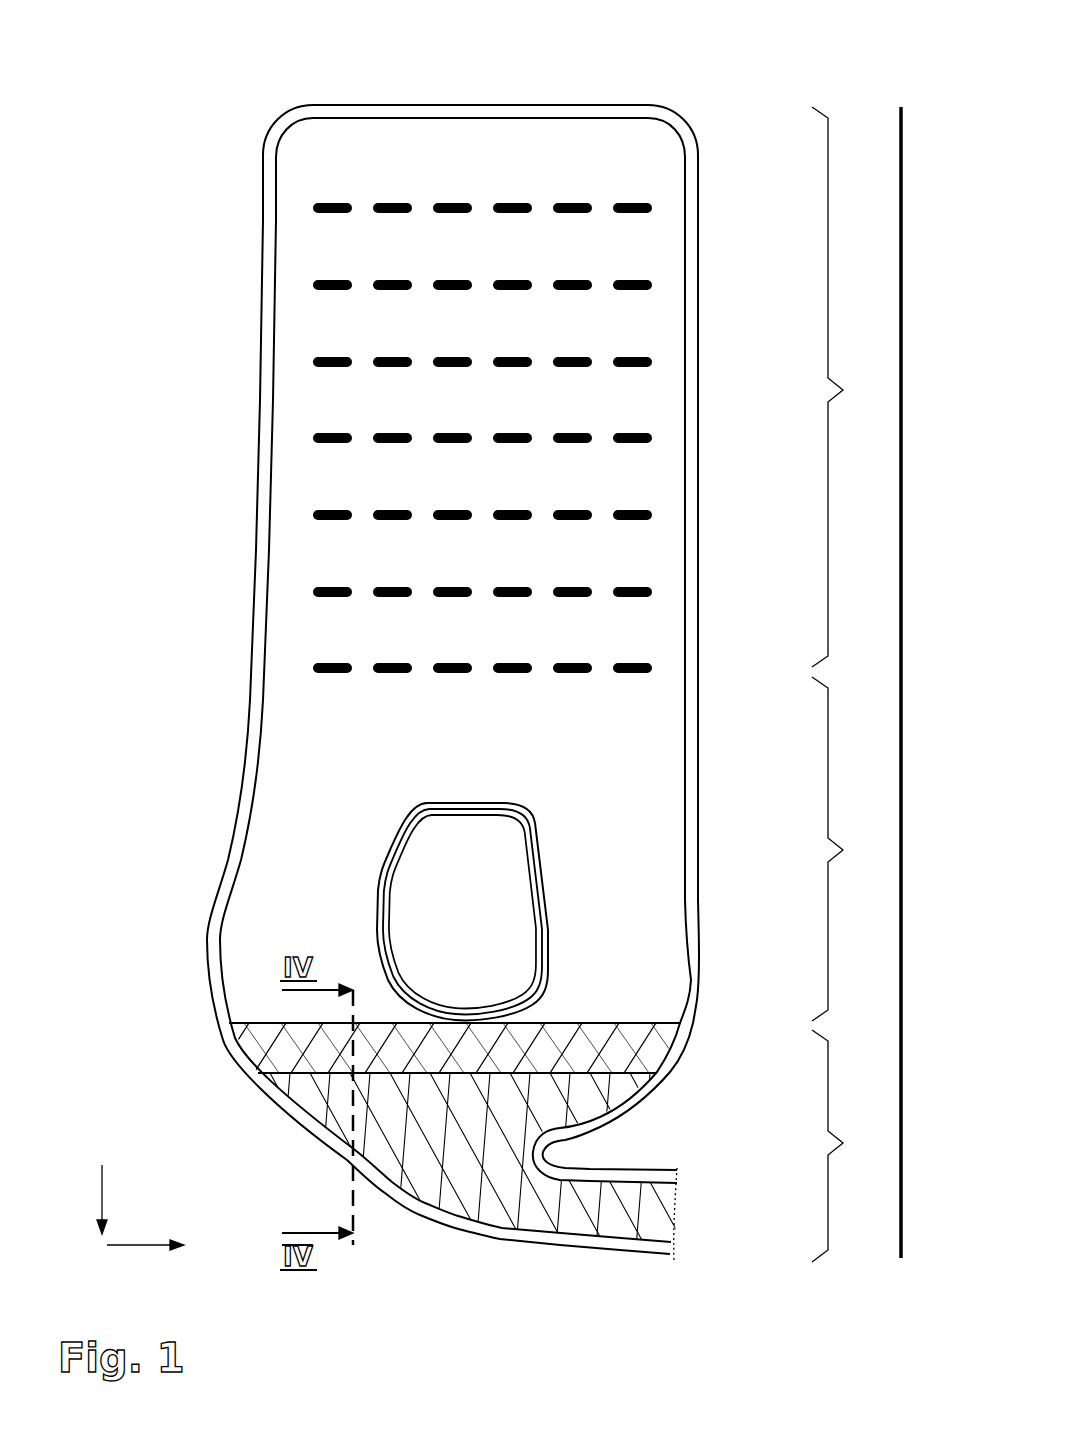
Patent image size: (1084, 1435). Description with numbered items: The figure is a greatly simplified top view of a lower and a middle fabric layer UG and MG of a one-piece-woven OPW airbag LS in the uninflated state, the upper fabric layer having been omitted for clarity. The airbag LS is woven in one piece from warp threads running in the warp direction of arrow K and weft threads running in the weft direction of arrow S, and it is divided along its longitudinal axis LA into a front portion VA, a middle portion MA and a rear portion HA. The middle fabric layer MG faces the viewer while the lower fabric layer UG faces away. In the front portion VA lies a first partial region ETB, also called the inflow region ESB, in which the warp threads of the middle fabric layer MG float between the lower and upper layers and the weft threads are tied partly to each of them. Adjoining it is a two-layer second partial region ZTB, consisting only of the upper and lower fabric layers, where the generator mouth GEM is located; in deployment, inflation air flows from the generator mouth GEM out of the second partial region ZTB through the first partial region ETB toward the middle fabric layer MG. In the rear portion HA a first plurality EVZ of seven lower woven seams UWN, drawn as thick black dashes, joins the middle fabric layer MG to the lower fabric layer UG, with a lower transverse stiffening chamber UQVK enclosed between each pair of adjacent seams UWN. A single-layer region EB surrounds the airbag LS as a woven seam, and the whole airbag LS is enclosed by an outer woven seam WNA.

The OPW airbag LS is at (206, 96).
The first plurality of lower woven seams EVZ is at (347, 84).
The lower fabric layer UG is at (484, 137).
The outer woven seam WNA is at (654, 110).
The middle fabric layer MG is at (308, 168).
The lower woven seam UWN is at (313, 208).
The lower transverse stiffening chamber UQVK is at (330, 382).
The single-layer region EB is at (215, 893).
The first partial region ETB is at (267, 1047).
The inflow region ESB is at (300, 1097).
The second partial region ZTB is at (478, 1210).
The generator mouth GEM is at (653, 1217).
The rear portion HA is at (849, 387).
The middle portion MA is at (850, 849).
The front portion VA is at (847, 1146).
The longitudinal axis LA is at (903, 658).
The warp direction arrow K is at (101, 1190).
The weft direction arrow S is at (146, 1248).